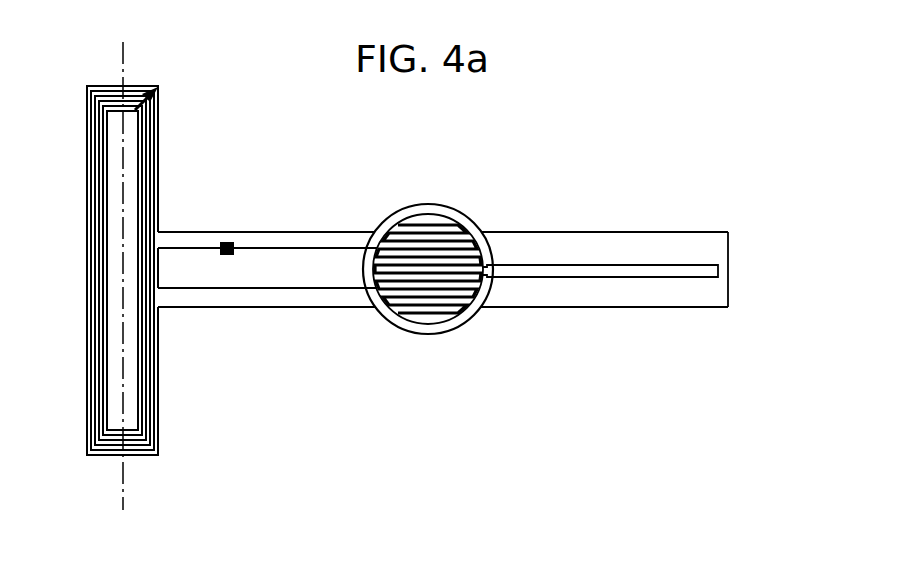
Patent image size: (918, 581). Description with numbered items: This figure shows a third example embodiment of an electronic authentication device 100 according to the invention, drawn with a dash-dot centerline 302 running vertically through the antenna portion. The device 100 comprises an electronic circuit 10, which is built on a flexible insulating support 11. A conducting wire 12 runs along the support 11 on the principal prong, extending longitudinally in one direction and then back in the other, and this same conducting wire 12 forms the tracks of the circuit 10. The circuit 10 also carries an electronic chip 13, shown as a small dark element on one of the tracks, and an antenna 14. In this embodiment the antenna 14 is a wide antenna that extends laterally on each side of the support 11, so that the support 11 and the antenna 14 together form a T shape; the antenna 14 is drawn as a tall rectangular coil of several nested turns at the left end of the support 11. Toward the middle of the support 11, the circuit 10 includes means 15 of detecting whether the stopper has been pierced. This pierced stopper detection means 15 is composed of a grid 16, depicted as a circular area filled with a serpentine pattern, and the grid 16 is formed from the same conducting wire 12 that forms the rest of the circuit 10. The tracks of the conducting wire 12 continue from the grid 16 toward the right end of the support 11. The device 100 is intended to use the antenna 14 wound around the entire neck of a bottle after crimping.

The electronic authentication device 100 is at (632, 96).
The fold axis / centerline 302 is at (110, 481).
The antenna 14 is at (100, 73).
The electronic circuit 10 is at (745, 243).
The flexible insulating support 11 is at (692, 248).
The conducting wire 12 is at (307, 246).
The electronic chip 13 is at (215, 232).
The pierced stopper detection means 15 is at (400, 200).
The grid 16 is at (418, 292).